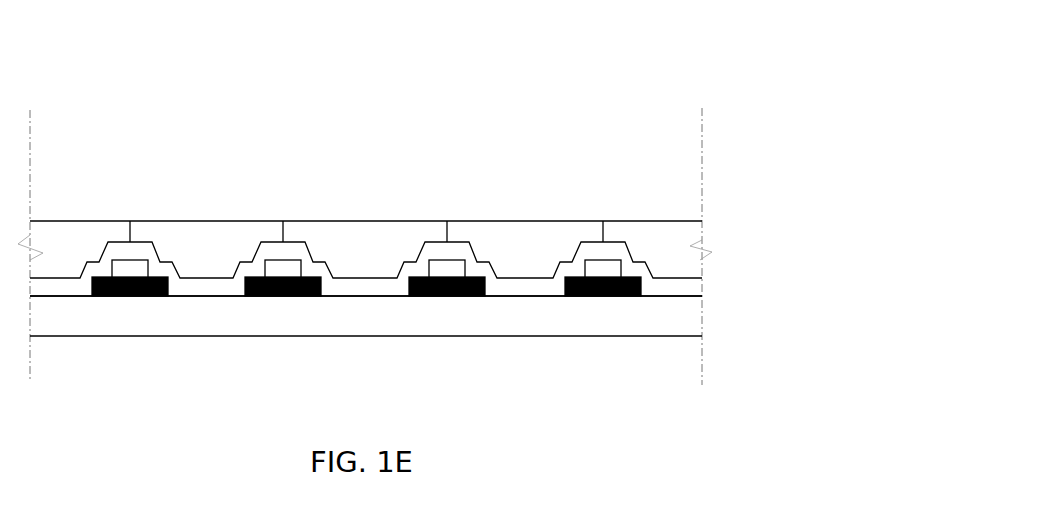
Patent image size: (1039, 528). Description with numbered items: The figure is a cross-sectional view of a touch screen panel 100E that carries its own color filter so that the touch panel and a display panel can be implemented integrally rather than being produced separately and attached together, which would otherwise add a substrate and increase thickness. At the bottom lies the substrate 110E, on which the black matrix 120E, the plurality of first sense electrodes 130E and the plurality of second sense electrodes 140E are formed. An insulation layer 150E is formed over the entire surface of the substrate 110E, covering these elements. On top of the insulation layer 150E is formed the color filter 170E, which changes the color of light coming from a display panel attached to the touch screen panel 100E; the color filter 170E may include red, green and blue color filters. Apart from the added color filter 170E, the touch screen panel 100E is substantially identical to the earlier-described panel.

The touch screen panel 100E is at (705, 52).
The substrate 110E is at (675, 318).
The black matrix 120E is at (597, 297).
The first sense electrodes 130E is at (447, 296).
The second sense electrodes 140E is at (278, 270).
The insulation layer 150E is at (675, 287).
The color filter 170E is at (658, 235).